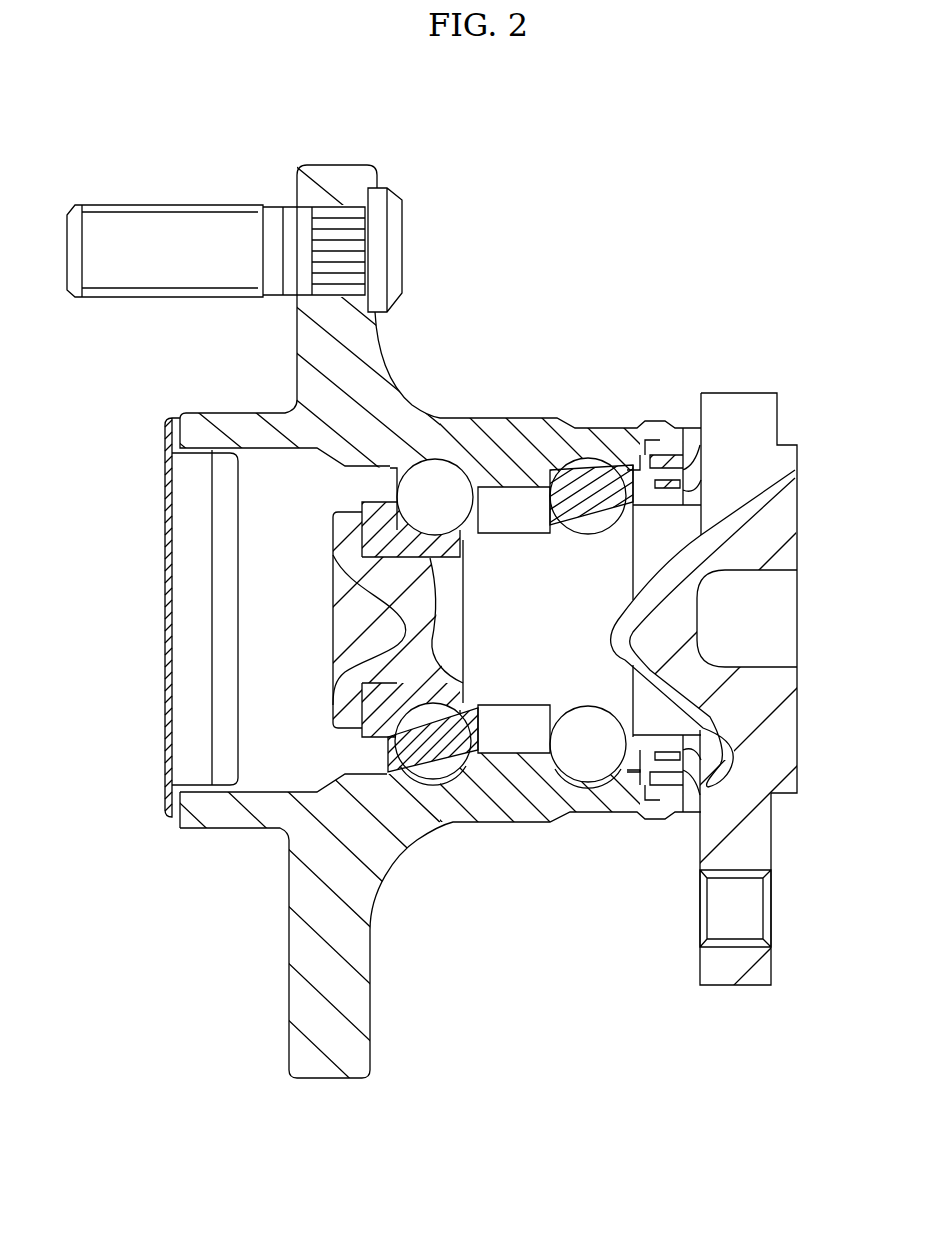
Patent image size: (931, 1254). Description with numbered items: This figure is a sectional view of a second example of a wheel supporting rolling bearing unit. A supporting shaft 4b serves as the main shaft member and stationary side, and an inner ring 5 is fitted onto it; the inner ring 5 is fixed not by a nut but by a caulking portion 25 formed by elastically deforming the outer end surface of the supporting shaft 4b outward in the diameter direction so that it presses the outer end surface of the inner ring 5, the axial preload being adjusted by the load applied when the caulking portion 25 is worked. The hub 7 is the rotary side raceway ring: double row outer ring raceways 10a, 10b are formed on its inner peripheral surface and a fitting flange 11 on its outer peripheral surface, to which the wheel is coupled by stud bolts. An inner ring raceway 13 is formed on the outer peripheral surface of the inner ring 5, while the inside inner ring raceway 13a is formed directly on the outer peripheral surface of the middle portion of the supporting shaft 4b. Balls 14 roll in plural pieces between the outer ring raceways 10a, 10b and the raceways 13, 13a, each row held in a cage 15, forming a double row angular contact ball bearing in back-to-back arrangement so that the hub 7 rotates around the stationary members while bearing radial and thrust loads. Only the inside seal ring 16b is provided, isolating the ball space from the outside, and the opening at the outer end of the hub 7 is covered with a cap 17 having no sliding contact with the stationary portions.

The supporting shaft 4b is at (520, 655).
The inner ring 5 is at (375, 525).
The hub 7 is at (522, 440).
The outer ring raceway 10a is at (436, 775).
The outer ring raceway 10b is at (575, 779).
The fitting flange 11 is at (330, 990).
The inner ring raceway 13 is at (432, 520).
The inside inner ring raceway 13a is at (605, 770).
The ball 14 is at (465, 480).
The cage 15 is at (565, 527).
The inside seal ring 16b is at (677, 420).
The cap 17 is at (165, 690).
The caulking portion 25 is at (348, 551).